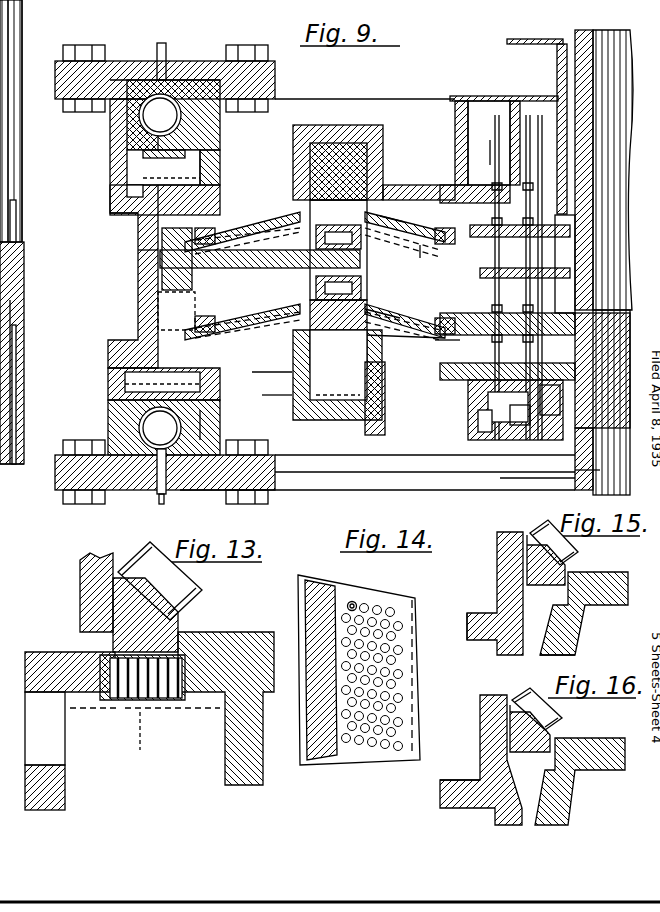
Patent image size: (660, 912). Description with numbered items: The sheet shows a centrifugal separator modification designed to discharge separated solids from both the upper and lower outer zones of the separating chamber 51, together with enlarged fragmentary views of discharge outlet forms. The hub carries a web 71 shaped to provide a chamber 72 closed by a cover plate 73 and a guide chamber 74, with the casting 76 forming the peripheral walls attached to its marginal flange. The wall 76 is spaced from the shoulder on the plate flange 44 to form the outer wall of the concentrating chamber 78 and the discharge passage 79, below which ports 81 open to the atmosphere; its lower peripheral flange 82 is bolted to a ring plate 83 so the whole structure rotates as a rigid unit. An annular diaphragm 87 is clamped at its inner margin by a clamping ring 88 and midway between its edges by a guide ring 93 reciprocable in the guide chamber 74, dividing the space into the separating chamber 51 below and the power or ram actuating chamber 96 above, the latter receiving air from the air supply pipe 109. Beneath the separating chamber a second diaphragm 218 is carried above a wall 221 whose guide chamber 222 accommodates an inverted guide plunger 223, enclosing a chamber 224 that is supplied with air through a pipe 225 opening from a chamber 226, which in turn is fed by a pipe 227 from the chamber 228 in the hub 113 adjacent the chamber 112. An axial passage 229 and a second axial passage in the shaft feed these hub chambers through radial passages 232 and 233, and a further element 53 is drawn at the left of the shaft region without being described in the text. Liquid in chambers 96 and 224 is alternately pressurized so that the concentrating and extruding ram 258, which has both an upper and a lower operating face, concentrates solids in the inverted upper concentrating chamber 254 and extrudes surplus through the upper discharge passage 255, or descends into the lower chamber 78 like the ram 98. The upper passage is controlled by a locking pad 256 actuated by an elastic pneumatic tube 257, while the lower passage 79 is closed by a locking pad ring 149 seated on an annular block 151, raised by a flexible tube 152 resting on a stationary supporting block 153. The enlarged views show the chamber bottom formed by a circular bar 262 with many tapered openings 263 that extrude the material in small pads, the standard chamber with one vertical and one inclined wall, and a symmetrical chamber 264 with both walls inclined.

In FIG. 9, the plate flange 44 is at (210, 424).
In FIG. 9, the separating chamber 51 is at (358, 262).
In FIG. 9, the rod 53 is at (16, 222).
In FIG. 9, the web 71 is at (418, 185).
In FIG. 9, the chamber 72 is at (489, 143).
In FIG. 9, the cover plate 73 is at (462, 96).
In FIG. 9, the guide chamber 74 is at (330, 150).
In FIG. 9, the casting forming peripheral walls 76 is at (148, 282).
In FIG. 13, the casting forming peripheral walls 76 is at (92, 608).
In FIG. 14, the casting forming peripheral walls 76 is at (318, 728).
In FIG. 15, the casting forming peripheral walls 76 is at (505, 568).
In FIG. 16, the casting forming peripheral walls 76 is at (490, 716).
In FIG. 9, the concentrating chamber 78 is at (165, 340).
In FIG. 15, the concentrating chamber 78 is at (560, 612).
In FIG. 9, the discharge passage 79 is at (125, 380).
In FIG. 15, the discharge passage 79 is at (525, 652).
In FIG. 16, the discharge passage 79 is at (548, 814).
In FIG. 9, the ports or openings 81 is at (112, 392).
In FIG. 13, the ports or openings 81 is at (38, 724).
In FIG. 9, the peripheral flange 82 is at (58, 468).
In FIG. 9, the ring plate 83 is at (210, 490).
In FIG. 9, the diaphragm 87 is at (401, 214).
In FIG. 9, the clamping ring 88 is at (419, 259).
In FIG. 9, the guide ring 93 is at (372, 150).
In FIG. 9, the power or ram actuating chamber 96 is at (475, 202).
In FIG. 13, the ram 98 is at (170, 618).
In FIG. 15, the ram 98 is at (568, 570).
In FIG. 16, the ram 98 is at (552, 736).
In FIG. 9, the air supply pipe 109 is at (490, 152).
In FIG. 9, the chamber 112 is at (525, 430).
In FIG. 9, the hub 113 is at (468, 395).
In FIG. 9, the locking pad ring 149 is at (252, 380).
In FIG. 13, the locking pad ring 149 is at (136, 737).
In FIG. 9, the annular block 151 is at (262, 400).
In FIG. 9, the flexible tube 152 is at (160, 428).
In FIG. 9, the supporting block 153 is at (152, 480).
In FIG. 9, the diaphragm 218 is at (400, 318).
In FIG. 9, the wall 221 is at (435, 372).
In FIG. 9, the guide chamber 222 is at (338, 420).
In FIG. 9, the guide plunger 223 is at (365, 348).
In FIG. 9, the chamber 224 is at (447, 347).
In FIG. 9, the pipe 225 is at (520, 272).
In FIG. 9, the chamber 226 is at (515, 101).
In FIG. 9, the pipe 227 is at (500, 240).
In FIG. 9, the chamber 228 is at (548, 430).
In FIG. 9, the air supply passage 229 is at (527, 485).
In FIG. 9, the radial passage 232 is at (16, 330).
In FIG. 9, the radial passage 233 is at (18, 302).
In FIG. 9, the concentrating chamber 254 is at (160, 222).
In FIG. 9, the discharge passage 255 is at (160, 192).
In FIG. 9, the locking pad 256 is at (150, 160).
In FIG. 9, the elastic pneumatic tube 257 is at (140, 115).
In FIG. 9, the concentrating and extruding ram 258 is at (162, 258).
In FIG. 13, the circular bar or plate 262 is at (95, 712).
In FIG. 14, the circular bar or plate 262 is at (392, 672).
In FIG. 15, the circular bar or plate 262 is at (478, 650).
In FIG. 13, the tapered openings 263 is at (148, 700).
In FIG. 14, the tapered openings 263 is at (372, 608).
In FIG. 16, the symmetrical chamber 264 is at (520, 770).